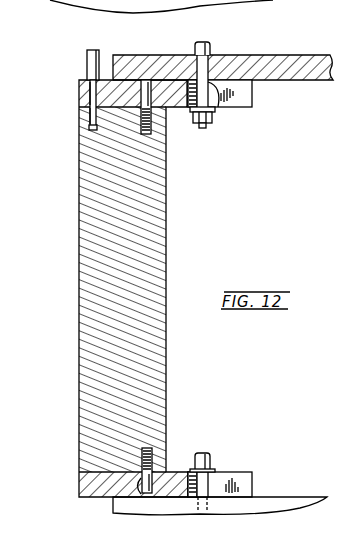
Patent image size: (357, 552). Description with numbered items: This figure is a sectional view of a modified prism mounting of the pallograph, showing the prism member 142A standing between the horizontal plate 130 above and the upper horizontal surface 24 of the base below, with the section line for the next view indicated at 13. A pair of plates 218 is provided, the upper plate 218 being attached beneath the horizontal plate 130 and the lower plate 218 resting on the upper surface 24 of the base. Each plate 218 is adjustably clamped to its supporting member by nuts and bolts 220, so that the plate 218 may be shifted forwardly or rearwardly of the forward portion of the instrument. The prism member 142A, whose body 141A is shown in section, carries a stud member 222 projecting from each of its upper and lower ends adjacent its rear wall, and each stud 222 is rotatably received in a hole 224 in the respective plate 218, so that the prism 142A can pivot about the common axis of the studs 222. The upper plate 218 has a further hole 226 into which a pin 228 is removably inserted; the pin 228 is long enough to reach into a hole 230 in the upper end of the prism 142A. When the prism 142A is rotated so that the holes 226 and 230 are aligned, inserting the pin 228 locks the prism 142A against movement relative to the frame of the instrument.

The horizontal plate 130 is at (272, 68).
The upper horizontal surface 24 is at (288, 496).
The column member 141A is at (79, 240).
The modified prism member 142A is at (135, 247).
The plate 218 is at (250, 97).
The nuts and bolts 220 is at (213, 85).
The stud member 222 is at (145, 80).
The hole 224 is at (171, 80).
The hole 226 is at (93, 90).
The pin 228 is at (91, 55).
The hole 230 is at (89, 113).
The section line 13- 13 is at (57, 350).